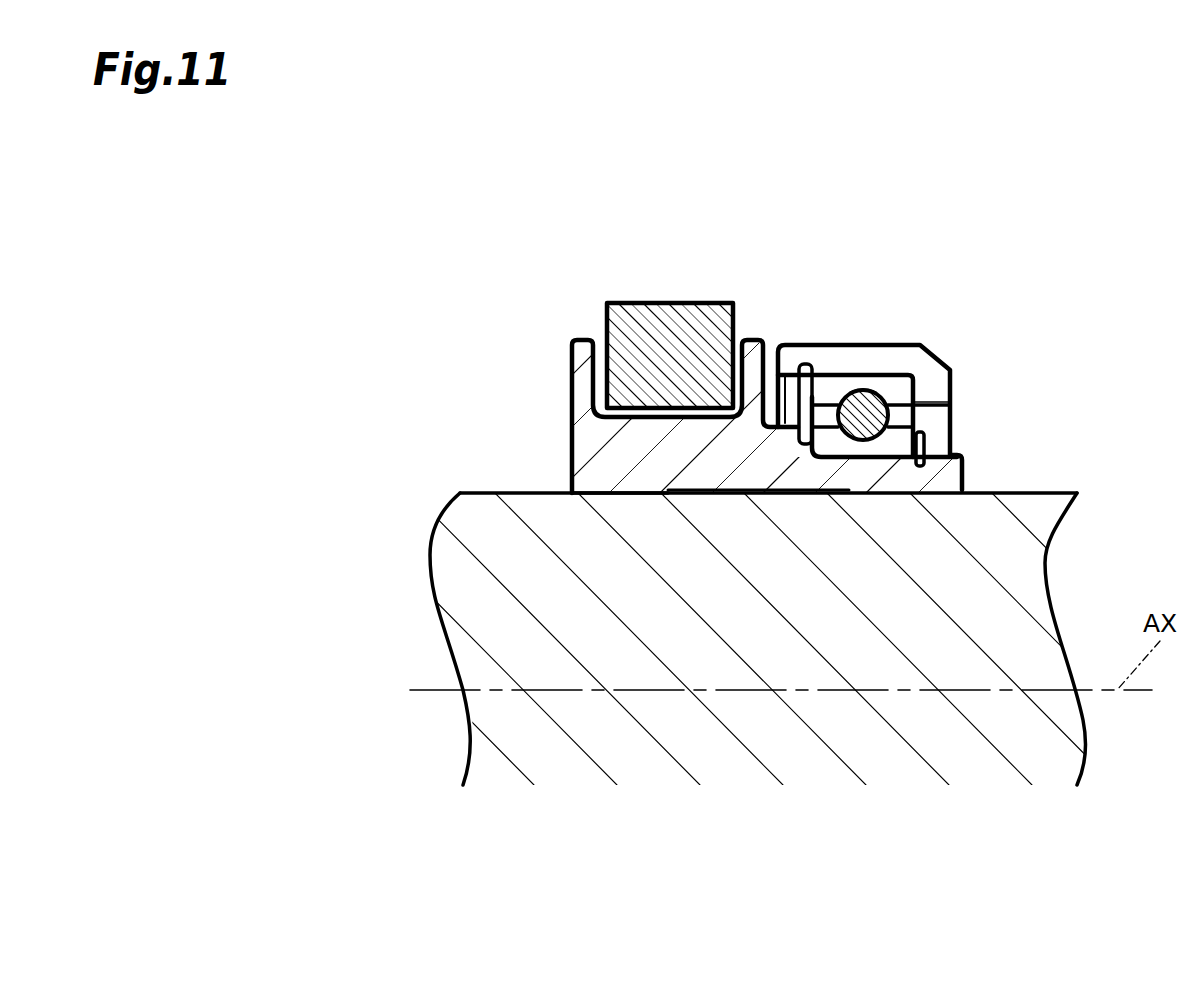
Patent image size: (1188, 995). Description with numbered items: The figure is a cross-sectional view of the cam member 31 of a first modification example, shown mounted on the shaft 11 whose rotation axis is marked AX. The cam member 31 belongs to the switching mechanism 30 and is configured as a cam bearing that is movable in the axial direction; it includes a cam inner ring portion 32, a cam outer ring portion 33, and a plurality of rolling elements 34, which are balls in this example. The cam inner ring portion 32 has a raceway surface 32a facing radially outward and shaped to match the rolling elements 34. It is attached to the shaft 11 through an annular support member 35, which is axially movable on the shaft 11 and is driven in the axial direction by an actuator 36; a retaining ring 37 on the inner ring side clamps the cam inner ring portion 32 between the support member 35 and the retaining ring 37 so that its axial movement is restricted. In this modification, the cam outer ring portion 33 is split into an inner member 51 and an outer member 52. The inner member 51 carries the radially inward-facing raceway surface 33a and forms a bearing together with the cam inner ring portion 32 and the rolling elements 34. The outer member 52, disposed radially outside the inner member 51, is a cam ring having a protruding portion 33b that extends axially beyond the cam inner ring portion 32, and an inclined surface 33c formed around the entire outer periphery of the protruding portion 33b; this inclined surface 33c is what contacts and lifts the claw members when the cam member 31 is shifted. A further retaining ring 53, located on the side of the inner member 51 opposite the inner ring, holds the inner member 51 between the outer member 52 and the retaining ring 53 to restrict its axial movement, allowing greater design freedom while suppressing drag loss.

The shaft 11 is at (1035, 527).
The switching mechanism 30 is at (578, 323).
The cam member 31 is at (903, 345).
The cam inner ring portion 32 is at (838, 462).
The raceway surface 32a is at (873, 462).
The cam outer ring portion 33 is at (906, 334).
The raceway surface 33a is at (868, 388).
The protruding portion 33b is at (932, 388).
The inclined surface 33c is at (932, 388).
The rolling elements 34 is at (872, 413).
The support member 35 is at (636, 465).
The actuator 36 is at (677, 328).
The retaining ring 37 is at (923, 450).
The inner member 51 is at (836, 375).
The outer member 52 is at (857, 388).
The retaining ring 53 is at (804, 362).